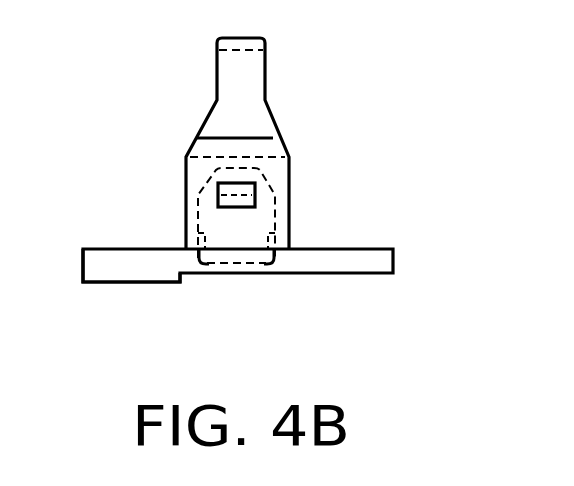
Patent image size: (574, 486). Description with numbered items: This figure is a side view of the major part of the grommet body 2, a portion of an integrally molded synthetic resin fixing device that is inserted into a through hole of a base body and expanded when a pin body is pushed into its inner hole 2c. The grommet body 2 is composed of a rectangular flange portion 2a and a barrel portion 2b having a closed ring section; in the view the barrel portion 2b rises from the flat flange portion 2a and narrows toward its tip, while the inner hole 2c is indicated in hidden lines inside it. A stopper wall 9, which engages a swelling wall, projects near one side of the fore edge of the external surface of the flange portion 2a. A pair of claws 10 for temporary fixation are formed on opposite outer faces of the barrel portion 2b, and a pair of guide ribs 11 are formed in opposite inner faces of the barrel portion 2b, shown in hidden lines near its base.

The grommet body 2 is at (186, 110).
The flange portion 2a is at (370, 263).
The barrel portion 2b is at (242, 88).
The inner hole 2c is at (247, 222).
The stopper wall 9 is at (123, 283).
The claws 10 is at (245, 198).
The guide ribs 11 is at (208, 273).